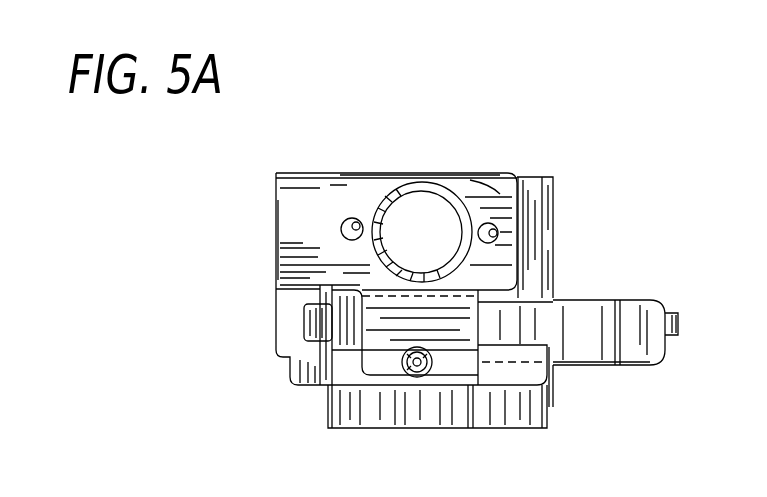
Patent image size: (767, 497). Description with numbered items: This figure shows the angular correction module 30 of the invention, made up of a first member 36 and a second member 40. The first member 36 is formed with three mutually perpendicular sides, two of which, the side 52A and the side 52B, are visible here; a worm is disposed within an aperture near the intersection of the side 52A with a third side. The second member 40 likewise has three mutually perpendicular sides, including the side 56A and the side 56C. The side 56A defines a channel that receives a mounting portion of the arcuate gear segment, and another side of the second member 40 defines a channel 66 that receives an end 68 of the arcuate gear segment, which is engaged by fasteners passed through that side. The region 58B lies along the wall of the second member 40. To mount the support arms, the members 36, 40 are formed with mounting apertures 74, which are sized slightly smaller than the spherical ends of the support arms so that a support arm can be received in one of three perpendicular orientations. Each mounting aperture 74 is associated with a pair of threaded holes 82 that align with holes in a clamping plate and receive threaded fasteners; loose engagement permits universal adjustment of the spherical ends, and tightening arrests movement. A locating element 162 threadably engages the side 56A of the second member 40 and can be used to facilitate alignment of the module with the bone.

The printhead carriage assembly 30 is at (577, 170).
The second member 40 is at (277, 188).
The side wall 58B is at (276, 237).
The side 56C is at (364, 178).
The side 56A is at (483, 187).
The mounting aperture 74 is at (419, 192).
The threaded hole 82 is at (348, 218).
The side 52B is at (553, 217).
The channel 66 is at (304, 300).
The end of the arcuate gear segment 68 is at (317, 387).
The first member 36 is at (538, 388).
The side 52A is at (370, 382).
The locating element 162 is at (430, 372).